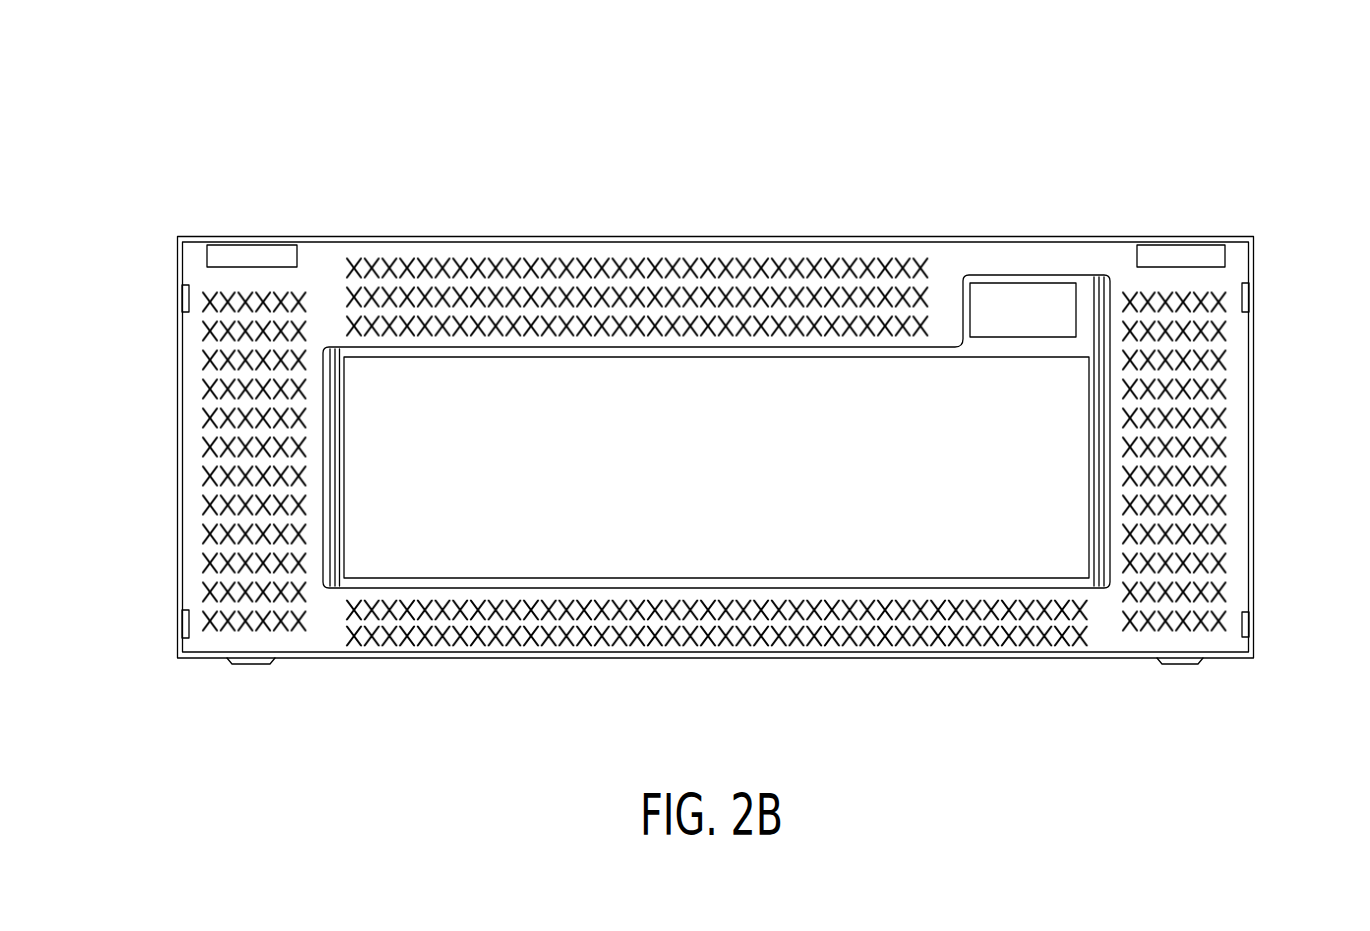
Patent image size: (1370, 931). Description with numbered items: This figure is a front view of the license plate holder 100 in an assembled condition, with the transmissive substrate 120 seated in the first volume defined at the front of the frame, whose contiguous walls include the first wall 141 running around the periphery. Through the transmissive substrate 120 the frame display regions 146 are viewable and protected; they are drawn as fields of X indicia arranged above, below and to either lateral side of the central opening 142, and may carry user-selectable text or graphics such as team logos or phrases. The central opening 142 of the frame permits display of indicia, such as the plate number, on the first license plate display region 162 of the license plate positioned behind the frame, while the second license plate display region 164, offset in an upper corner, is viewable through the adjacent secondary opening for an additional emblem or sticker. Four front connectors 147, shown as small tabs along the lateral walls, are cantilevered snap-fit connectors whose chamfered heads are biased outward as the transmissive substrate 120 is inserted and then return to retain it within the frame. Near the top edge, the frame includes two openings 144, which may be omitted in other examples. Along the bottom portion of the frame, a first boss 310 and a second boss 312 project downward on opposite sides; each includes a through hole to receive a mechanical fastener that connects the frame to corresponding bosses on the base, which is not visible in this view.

The license plate holder 100 is at (1105, 169).
The transmissive substrate 120 is at (977, 352).
The first wall 141 is at (327, 257).
The central opening 142 is at (520, 590).
The openings 144 is at (262, 257).
The frame display regions 146 is at (658, 281).
The front connectors 147 is at (178, 298).
The first license plate display region 162 is at (729, 480).
The second license plate display region 164 is at (1037, 321).
The first boss 310 is at (252, 665).
The second boss 312 is at (1181, 665).